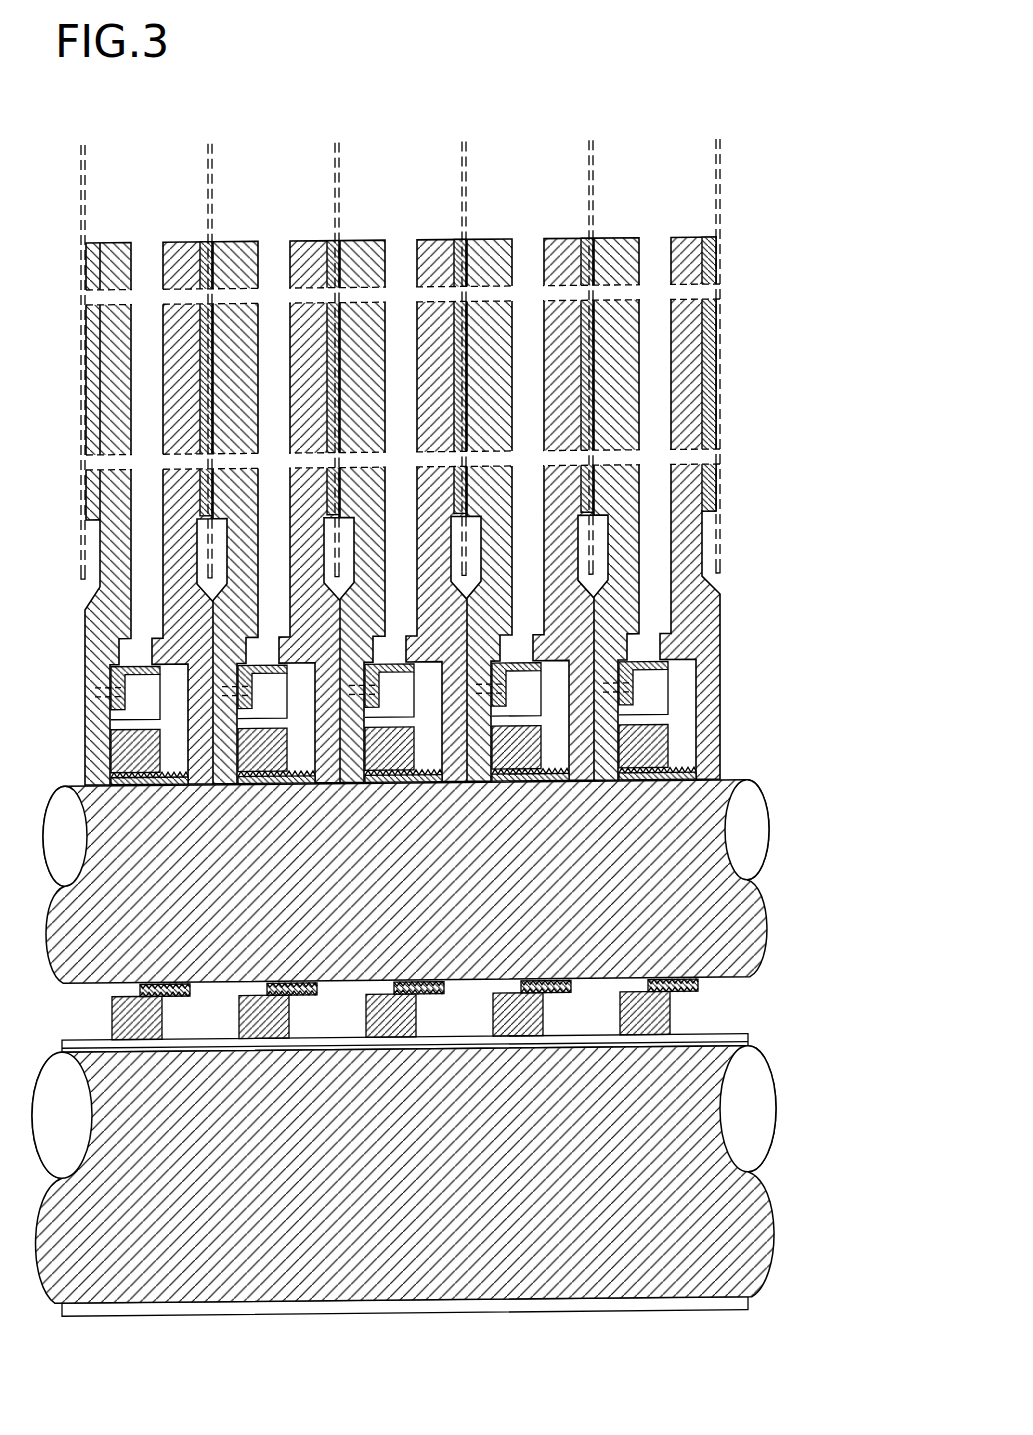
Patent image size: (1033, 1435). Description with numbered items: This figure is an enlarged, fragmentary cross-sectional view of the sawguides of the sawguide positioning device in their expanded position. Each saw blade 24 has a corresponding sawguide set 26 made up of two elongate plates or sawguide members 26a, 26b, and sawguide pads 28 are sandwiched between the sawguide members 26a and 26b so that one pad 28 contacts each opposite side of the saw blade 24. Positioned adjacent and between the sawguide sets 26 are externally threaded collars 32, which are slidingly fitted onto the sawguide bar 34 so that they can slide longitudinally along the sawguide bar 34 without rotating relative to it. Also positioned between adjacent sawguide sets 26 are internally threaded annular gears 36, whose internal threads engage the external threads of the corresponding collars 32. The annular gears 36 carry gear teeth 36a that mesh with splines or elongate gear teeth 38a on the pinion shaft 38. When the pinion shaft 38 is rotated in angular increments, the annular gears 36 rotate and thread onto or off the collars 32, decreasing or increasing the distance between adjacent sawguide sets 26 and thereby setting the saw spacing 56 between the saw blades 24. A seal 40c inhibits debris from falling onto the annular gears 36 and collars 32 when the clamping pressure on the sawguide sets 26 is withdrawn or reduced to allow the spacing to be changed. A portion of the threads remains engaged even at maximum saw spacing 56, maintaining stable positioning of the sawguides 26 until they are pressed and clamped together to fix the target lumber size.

The saw blade 24 is at (717, 158).
The sawguide set 26 is at (451, 451).
The sawguide member 26a is at (118, 250).
The sawguide member 26b is at (183, 251).
The sawguide pad 28 is at (705, 391).
The externally threaded collar 32 is at (693, 773).
The sawguide bar 34 is at (770, 844).
The internally threaded annular gear 36 is at (668, 747).
The gear teeth 36a is at (678, 1041).
The pinion shaft 38 is at (725, 1149).
The splines or elongate gear teeth 38a is at (720, 1051).
The seal 40c is at (627, 705).
The saw spacing 56 is at (707, 124).